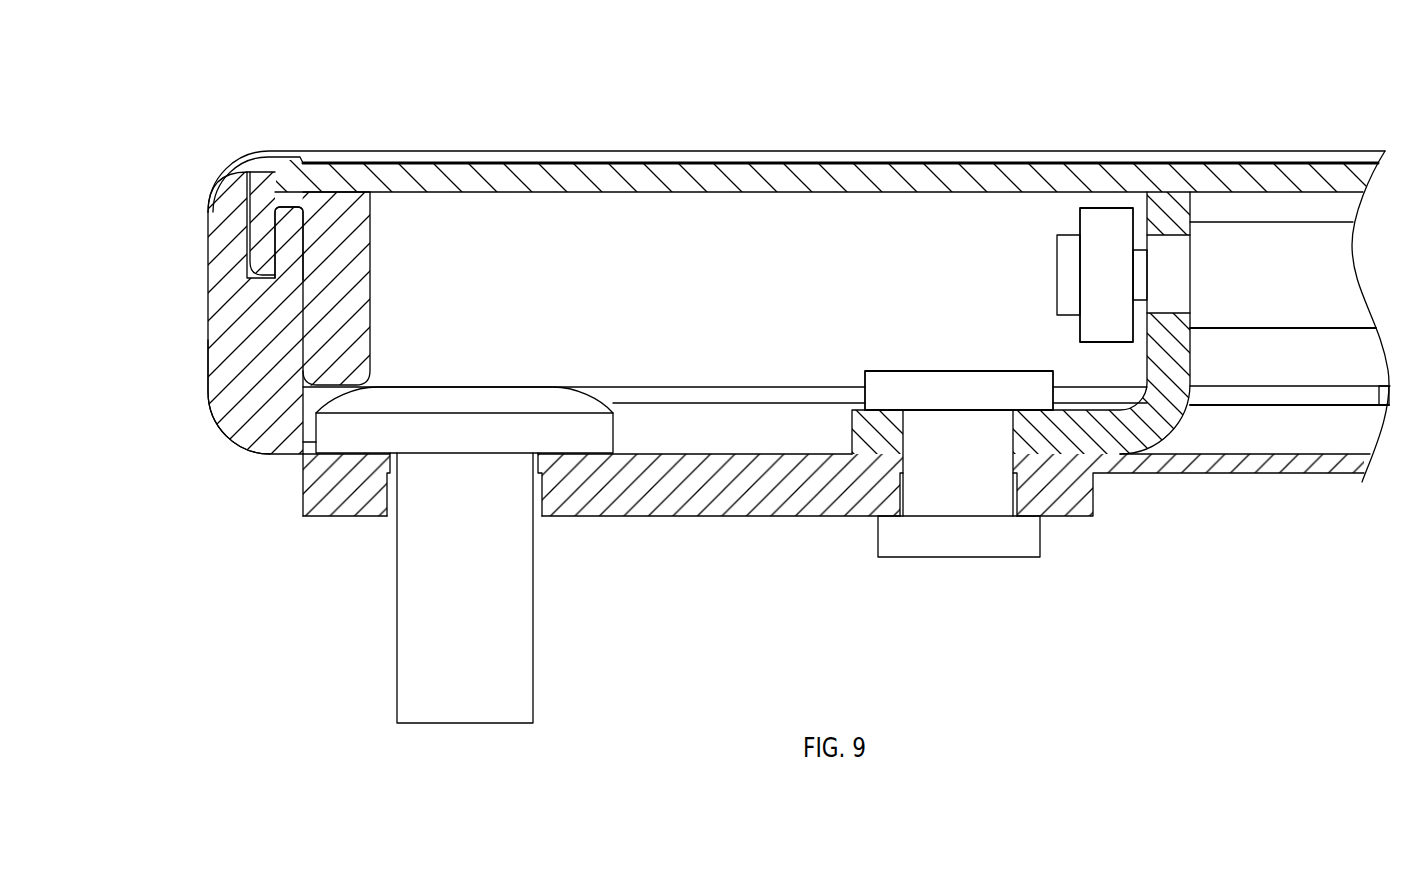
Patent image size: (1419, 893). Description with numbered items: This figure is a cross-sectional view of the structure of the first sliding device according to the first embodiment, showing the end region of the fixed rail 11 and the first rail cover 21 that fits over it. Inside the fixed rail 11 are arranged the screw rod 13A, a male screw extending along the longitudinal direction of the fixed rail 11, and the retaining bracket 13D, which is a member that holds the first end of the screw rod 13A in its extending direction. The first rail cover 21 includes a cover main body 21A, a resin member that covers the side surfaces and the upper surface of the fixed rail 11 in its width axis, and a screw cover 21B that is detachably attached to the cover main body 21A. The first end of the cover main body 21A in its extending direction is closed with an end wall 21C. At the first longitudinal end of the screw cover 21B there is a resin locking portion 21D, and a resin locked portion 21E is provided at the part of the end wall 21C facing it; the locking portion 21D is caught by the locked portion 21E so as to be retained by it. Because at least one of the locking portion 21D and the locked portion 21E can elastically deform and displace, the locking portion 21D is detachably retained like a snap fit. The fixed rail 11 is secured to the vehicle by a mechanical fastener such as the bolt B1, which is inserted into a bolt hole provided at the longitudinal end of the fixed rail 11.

The first rail cover 21 is at (848, 141).
The cover main body 21A is at (571, 151).
The screw cover 21B is at (668, 192).
The end wall 21C is at (208, 343).
The locking portion 21D is at (263, 249).
The locked portion 21E is at (292, 220).
The screw rod 13A is at (1282, 222).
The retaining bracket 13D is at (1178, 432).
The fixed rail 11 is at (778, 518).
The bolt B1 is at (510, 627).